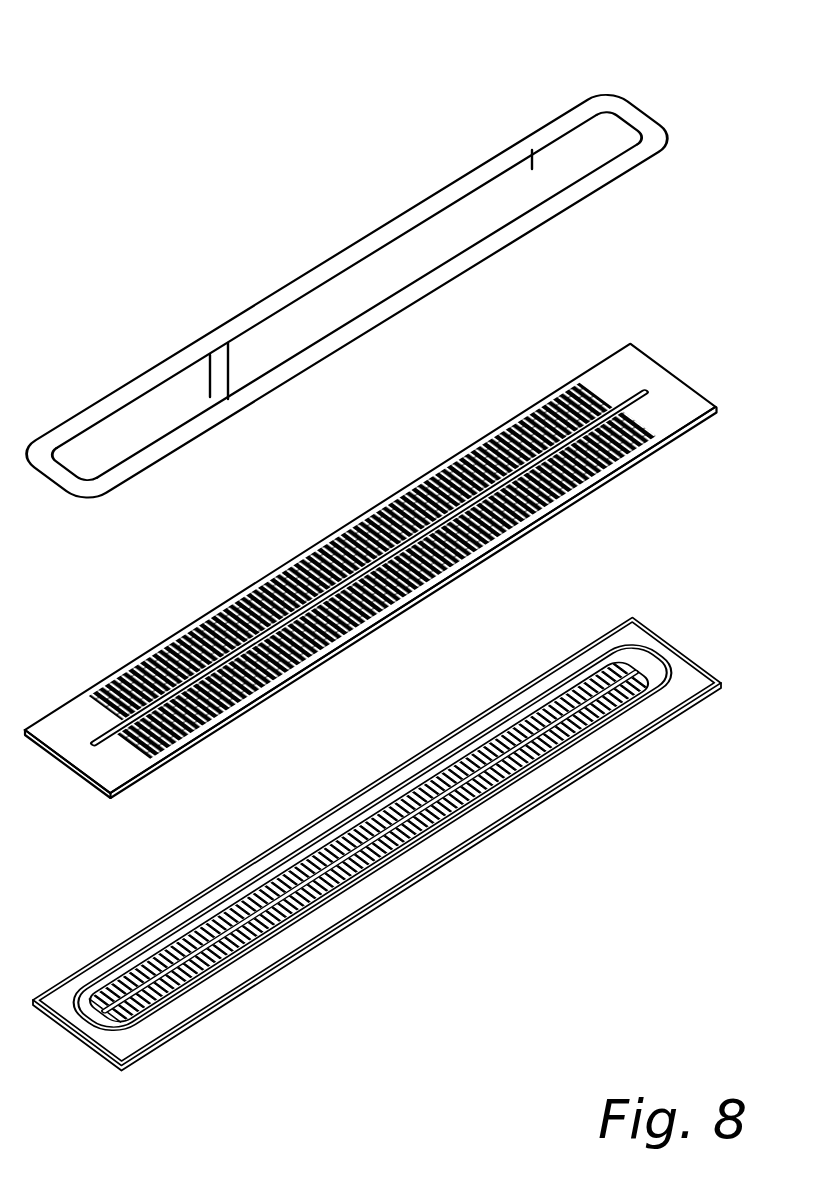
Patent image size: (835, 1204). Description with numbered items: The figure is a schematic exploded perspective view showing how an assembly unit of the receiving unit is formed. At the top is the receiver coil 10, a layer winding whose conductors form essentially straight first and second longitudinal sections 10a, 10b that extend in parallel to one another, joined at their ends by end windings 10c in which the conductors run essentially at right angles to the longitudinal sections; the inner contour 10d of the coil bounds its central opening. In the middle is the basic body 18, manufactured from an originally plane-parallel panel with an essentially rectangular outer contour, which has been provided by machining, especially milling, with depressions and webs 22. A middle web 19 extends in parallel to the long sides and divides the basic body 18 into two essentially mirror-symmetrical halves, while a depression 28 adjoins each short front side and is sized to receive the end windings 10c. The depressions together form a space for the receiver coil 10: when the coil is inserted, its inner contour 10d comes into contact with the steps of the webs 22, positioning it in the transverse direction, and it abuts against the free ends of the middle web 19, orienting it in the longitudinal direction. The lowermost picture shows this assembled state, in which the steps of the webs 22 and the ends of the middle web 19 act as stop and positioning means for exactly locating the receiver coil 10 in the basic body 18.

The receiver coil 10 is at (428, 175).
The first longitudinal section 10a is at (305, 274).
The second longitudinal section 10b is at (396, 306).
The end winding 10c is at (633, 110).
The inner contour 10d is at (534, 154).
The basic body 18 is at (357, 658).
The middle web 19 is at (647, 403).
The web 22 is at (457, 580).
The depression 28 is at (627, 375).